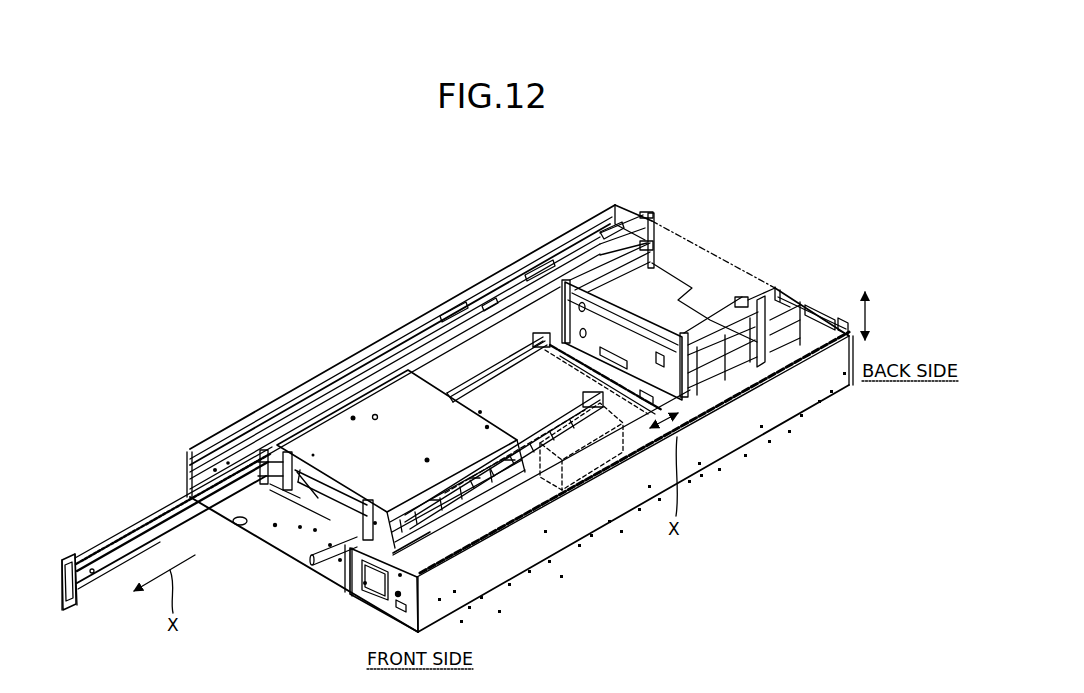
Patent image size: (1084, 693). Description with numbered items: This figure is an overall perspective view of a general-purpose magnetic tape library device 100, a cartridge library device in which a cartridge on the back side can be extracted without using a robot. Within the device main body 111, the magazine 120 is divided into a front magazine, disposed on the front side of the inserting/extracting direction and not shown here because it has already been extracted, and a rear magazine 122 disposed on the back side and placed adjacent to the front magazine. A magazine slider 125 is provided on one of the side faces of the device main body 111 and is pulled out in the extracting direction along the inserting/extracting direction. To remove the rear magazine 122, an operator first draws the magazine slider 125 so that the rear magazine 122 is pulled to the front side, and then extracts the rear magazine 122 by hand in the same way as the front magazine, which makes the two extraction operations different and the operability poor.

The magnetic tape library device 100 is at (520, 370).
The device main body 111 is at (712, 442).
The magazine 120 is at (350, 397).
The rear magazine 122 is at (305, 437).
The magazine slider 125 is at (118, 548).